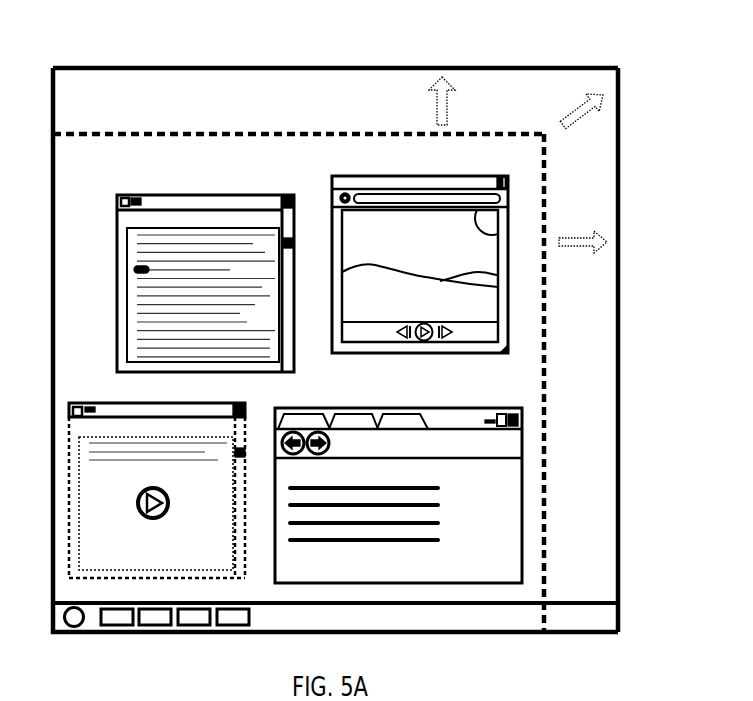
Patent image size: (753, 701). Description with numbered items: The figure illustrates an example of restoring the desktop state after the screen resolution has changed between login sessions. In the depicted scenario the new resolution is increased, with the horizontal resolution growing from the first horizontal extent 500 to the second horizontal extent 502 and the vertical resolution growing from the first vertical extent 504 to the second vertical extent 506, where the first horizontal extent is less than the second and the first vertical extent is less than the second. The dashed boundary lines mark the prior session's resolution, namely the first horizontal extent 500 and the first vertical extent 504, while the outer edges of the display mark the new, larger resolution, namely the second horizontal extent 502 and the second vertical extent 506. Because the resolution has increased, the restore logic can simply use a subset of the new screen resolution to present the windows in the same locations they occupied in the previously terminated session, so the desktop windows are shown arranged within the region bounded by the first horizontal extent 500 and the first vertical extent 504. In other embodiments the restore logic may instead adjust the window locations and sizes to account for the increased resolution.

The X1 500 is at (195, 132).
The X2 502 is at (262, 68).
The Y1 504 is at (545, 315).
The Y2 506 is at (620, 405).